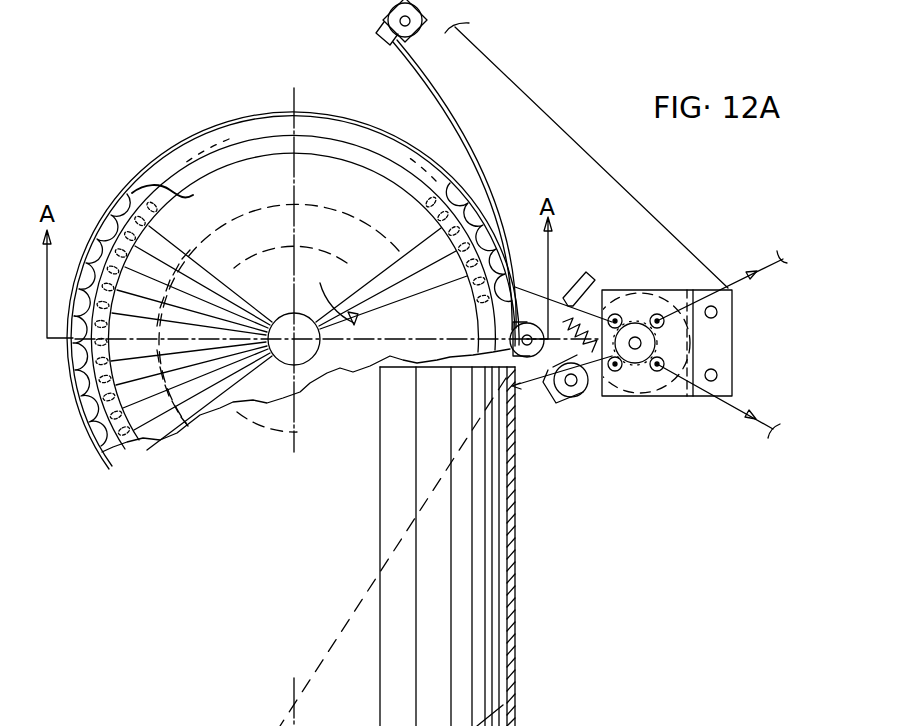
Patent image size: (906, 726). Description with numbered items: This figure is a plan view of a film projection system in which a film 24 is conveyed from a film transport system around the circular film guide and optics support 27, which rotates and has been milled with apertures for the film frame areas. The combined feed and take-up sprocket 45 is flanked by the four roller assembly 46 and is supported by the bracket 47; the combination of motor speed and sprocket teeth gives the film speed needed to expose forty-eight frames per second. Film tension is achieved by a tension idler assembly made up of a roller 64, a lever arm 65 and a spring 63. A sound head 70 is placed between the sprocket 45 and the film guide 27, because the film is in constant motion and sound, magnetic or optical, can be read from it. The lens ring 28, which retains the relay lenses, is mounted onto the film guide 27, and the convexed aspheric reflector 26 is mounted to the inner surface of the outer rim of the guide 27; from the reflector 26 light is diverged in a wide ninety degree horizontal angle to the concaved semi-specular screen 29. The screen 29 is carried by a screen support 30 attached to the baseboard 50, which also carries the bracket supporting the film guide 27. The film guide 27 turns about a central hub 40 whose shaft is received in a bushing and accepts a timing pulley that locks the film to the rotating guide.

The film 24 is at (740, 280).
The convexed aspheric reflector 26 is at (179, 199).
The film guide and optics support 27 is at (143, 168).
The lens ring 28 is at (200, 158).
The concaved semi-specular screen 29 is at (418, 68).
The screen support 30 is at (390, 18).
The central hub 40 is at (313, 360).
The combined feed and take-up sprocket 45 is at (639, 367).
The four roller assembly 46 is at (661, 369).
The bracket 47 is at (735, 336).
The baseboard 50 is at (548, 115).
The spring 63 is at (572, 341).
The roller 64 is at (582, 397).
The lever arm 65 is at (590, 395).
The sound head 70 is at (582, 273).